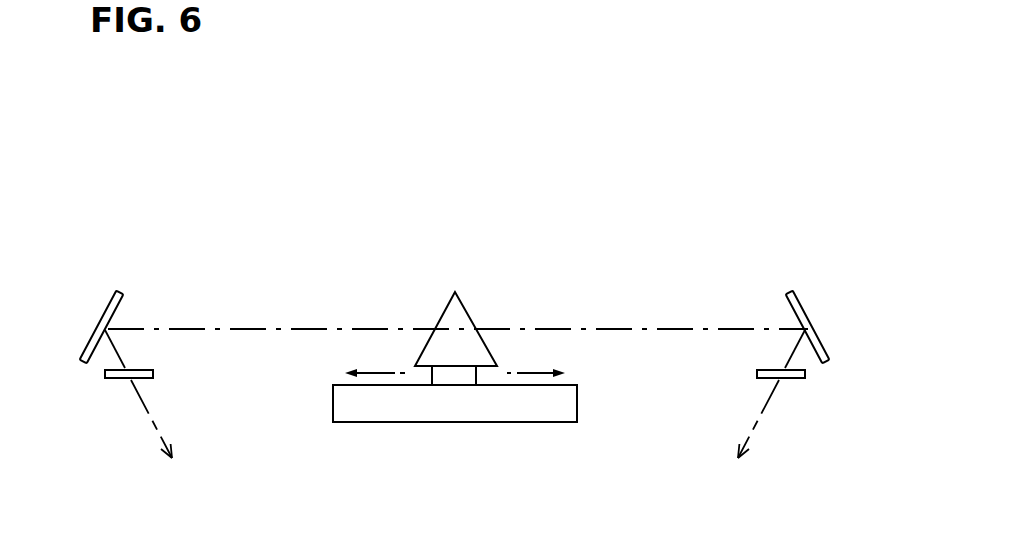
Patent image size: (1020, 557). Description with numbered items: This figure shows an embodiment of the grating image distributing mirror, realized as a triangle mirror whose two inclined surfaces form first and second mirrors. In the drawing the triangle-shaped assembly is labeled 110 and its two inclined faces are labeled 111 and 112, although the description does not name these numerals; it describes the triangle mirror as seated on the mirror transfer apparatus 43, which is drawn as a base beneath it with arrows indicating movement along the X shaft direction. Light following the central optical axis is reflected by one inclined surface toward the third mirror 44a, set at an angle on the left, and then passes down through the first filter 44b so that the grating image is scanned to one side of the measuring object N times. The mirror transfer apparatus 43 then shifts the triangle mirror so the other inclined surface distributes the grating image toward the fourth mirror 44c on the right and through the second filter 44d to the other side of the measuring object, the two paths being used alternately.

The optical unit 110 is at (465, 276).
The prism 111 is at (472, 320).
The prism support 112 is at (438, 317).
The mirror transfer apparatus 43 is at (463, 422).
The third mirror 44a is at (90, 342).
The first filter 44b is at (110, 378).
The fourth mirror 44c is at (825, 343).
The second filter 44d is at (795, 378).